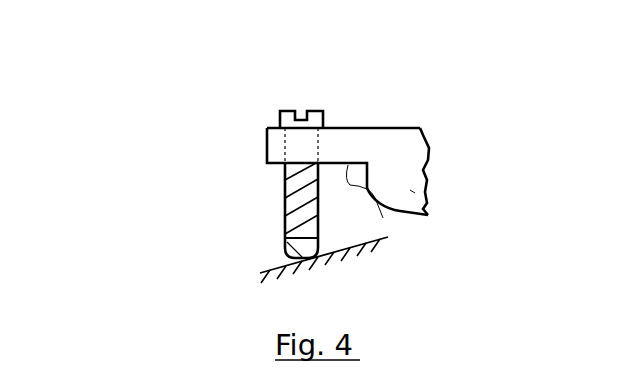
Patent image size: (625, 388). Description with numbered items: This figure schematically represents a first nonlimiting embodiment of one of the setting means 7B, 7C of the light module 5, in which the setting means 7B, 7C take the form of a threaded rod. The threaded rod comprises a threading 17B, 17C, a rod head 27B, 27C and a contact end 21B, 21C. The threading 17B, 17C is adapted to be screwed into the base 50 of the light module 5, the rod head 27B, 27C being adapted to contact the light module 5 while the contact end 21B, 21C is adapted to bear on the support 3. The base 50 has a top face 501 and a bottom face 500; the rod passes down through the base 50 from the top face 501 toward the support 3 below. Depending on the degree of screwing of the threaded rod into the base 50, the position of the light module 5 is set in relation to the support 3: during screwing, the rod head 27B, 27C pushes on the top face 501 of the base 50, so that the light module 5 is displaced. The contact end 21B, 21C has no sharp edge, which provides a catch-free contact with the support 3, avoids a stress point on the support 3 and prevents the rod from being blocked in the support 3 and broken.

The support 3 is at (392, 244).
The light module 5 is at (428, 193).
The setting means 7B is at (195, 143).
The setting means 7C is at (187, 112).
The threading 17B is at (242, 200).
The threading 17C is at (285, 183).
The contact end 21B is at (242, 228).
The contact end 21C is at (285, 242).
The rod head 27B is at (315, 73).
The rod head 27C is at (289, 110).
The base 50 is at (383, 238).
The bottom face 500 is at (343, 148).
The top face 501 is at (333, 127).